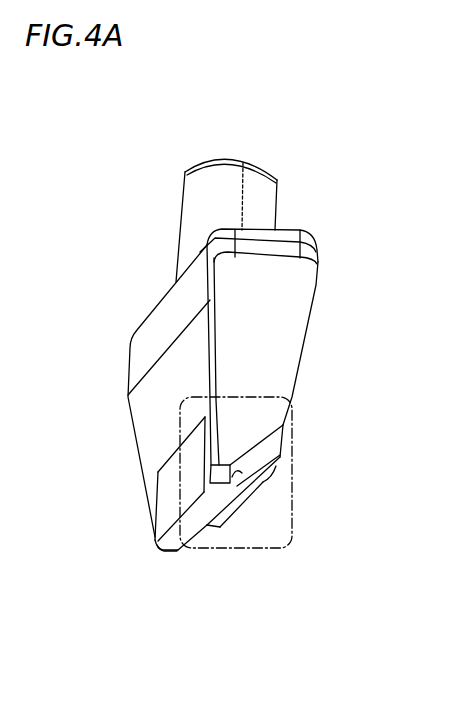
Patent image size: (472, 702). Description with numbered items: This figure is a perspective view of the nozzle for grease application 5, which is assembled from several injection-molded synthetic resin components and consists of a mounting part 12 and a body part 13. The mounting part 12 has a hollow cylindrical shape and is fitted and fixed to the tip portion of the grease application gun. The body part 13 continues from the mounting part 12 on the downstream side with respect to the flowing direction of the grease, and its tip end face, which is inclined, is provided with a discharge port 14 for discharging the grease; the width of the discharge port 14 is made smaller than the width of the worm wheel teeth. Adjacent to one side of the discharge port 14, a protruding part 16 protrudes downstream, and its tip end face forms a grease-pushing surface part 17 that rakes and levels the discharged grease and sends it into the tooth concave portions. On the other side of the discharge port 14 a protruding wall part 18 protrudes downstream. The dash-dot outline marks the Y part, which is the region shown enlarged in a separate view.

The nozzle for grease application 5 is at (142, 255).
The mounting part 12 is at (263, 197).
The body part 13 is at (290, 307).
The discharge port 14 is at (240, 495).
The protruding part 16 is at (158, 514).
The grease-pushing surface part 17 is at (185, 555).
The protruding wall part 18 is at (262, 476).
The Y part Y is at (293, 512).